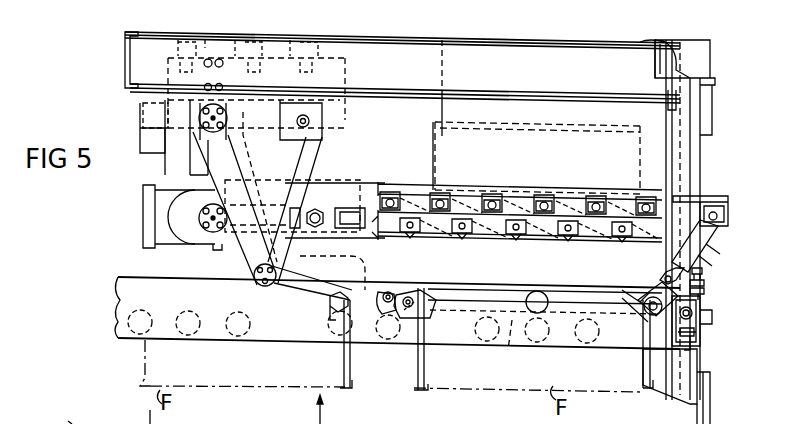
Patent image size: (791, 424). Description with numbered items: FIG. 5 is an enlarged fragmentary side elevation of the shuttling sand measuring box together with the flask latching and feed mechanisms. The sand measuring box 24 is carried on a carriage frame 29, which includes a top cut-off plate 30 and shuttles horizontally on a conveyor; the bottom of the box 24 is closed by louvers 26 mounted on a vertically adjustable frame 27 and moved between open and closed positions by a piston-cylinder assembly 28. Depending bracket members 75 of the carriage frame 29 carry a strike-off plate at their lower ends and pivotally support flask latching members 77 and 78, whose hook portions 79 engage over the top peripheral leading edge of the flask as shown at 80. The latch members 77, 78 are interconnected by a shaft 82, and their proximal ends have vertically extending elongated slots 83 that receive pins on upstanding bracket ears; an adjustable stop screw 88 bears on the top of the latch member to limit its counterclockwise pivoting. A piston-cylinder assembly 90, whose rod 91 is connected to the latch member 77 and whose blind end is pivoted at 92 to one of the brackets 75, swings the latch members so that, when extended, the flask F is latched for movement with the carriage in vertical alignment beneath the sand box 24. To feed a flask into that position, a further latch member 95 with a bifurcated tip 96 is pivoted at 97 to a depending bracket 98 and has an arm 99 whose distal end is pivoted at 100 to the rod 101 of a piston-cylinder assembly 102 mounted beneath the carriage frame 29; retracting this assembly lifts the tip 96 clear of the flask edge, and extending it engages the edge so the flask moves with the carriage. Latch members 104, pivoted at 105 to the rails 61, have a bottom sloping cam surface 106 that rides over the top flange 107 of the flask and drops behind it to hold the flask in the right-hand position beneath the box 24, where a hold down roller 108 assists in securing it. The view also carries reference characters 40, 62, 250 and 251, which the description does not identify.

The sand measuring box 24 is at (540, 116).
The louvers 26 is at (540, 236).
The vertically adjustable frame 27 is at (414, 188).
The piston-cylinder assembly 28 is at (170, 190).
The carriage frame 29 is at (452, 52).
The top cut-off plate 30 is at (356, 34).
The conveyor 40 is at (70, 423).
The rails 61 is at (288, 336).
The plate holes 62 is at (235, 338).
The depending bracket members 75 is at (700, 152).
The flask latching member 77 is at (703, 301).
The flask latching member 78 is at (718, 398).
The hook portions 79 is at (630, 298).
The top peripheral leading edge of flask 80 is at (642, 330).
The shaft 82 is at (646, 282).
The vertically extending elongated slots 83 is at (700, 334).
The adjustable stop screw 88 is at (702, 276).
The piston-cylinder assembly 90 is at (714, 236).
The rod 91 is at (660, 262).
The pivot 92 is at (724, 214).
The latch member 95 is at (320, 294).
The bifurcated tip 96 is at (353, 344).
The pivot 97 is at (254, 288).
The depending bracket 98 is at (240, 245).
The arm 99 is at (302, 160).
The pivot 100 is at (312, 122).
The rod 101 is at (260, 187).
The piston-cylinder assembly 102 is at (150, 118).
The latch members 104 is at (408, 290).
The pivot 105 is at (386, 290).
The bottom sloping cam surface 106 is at (405, 338).
The top flange 107 is at (514, 346).
The hold down roller 108 is at (545, 292).
The station 250 is at (130, 416).
The direction arrow 251 is at (324, 412).